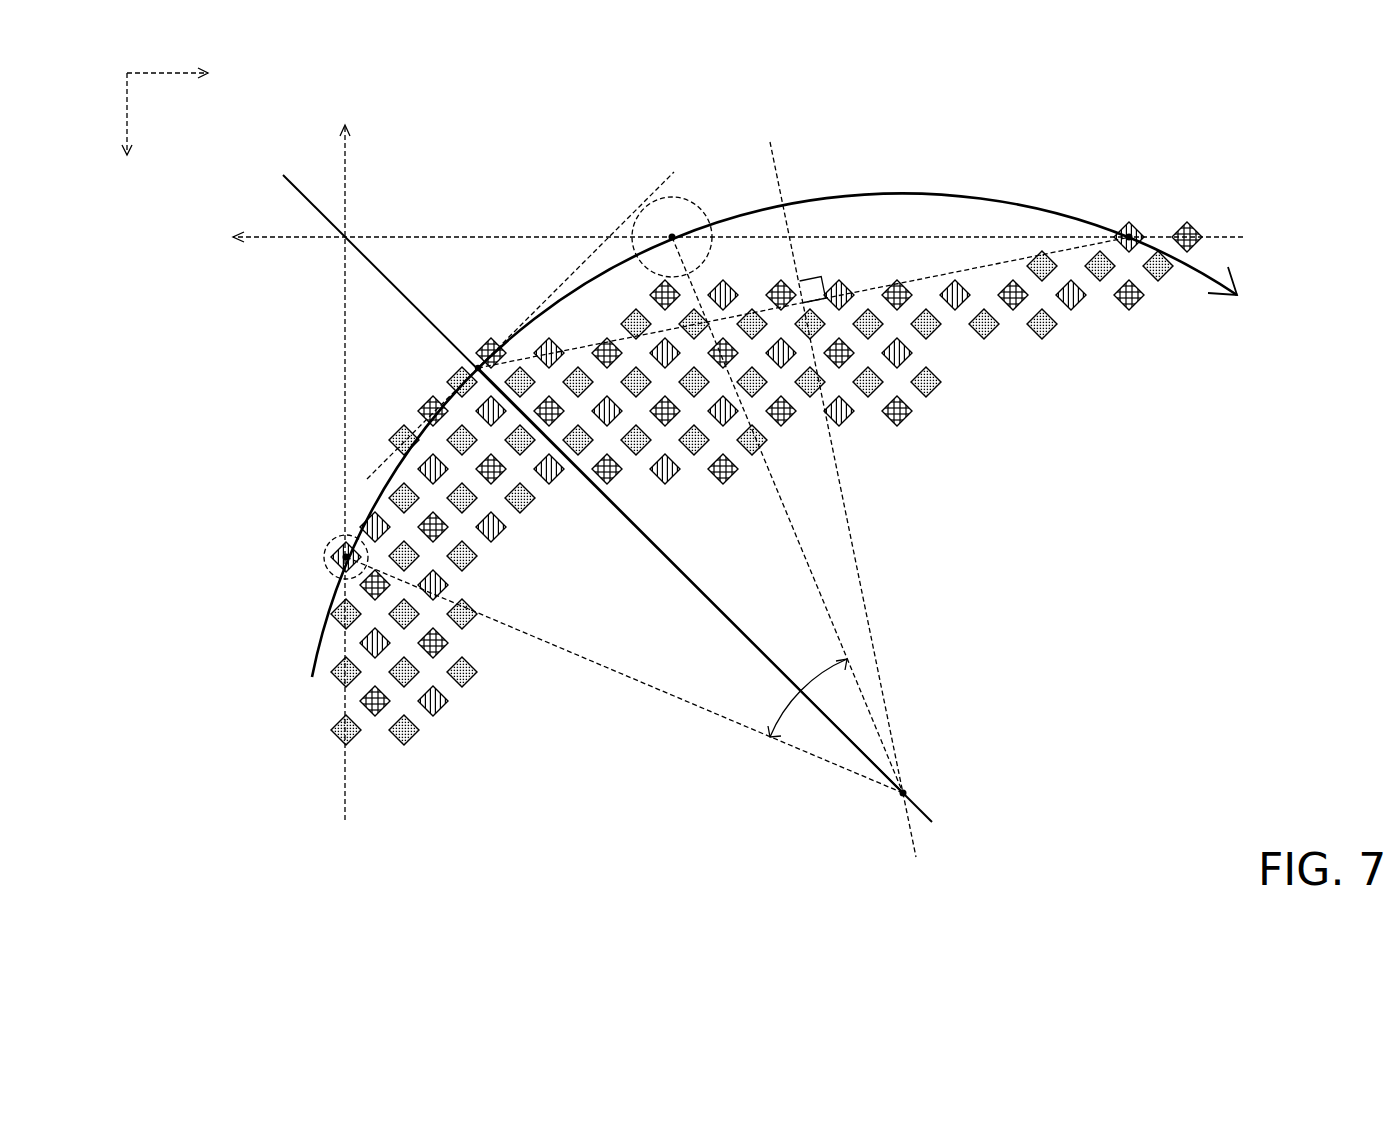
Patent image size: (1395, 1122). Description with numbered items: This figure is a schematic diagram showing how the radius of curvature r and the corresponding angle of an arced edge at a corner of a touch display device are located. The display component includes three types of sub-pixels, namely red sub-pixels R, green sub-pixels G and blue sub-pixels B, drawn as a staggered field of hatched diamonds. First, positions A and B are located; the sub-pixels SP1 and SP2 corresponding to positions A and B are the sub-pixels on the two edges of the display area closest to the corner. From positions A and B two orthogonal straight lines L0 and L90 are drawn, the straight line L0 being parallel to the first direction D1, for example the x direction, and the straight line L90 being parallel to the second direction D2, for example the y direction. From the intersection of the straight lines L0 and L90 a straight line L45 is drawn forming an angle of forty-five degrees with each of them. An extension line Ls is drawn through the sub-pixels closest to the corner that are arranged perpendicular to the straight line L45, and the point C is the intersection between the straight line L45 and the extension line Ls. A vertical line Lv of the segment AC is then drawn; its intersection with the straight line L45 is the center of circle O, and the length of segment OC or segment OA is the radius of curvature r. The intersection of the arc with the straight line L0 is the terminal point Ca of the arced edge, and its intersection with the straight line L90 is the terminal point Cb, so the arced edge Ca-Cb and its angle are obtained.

The first direction D1 is at (200, 75).
The second direction D2 is at (128, 144).
The straight line L0 is at (757, 238).
The straight line L45 is at (596, 483).
The straight line L90 is at (349, 490).
The extension line Ls is at (531, 314).
The vertical line Lv is at (836, 485).
The radius of curvature r is at (690, 580).
The center of circle O is at (916, 792).
The point C is at (478, 364).
The terminal point Ca is at (672, 237).
The terminal point Cb is at (338, 572).
The sub-pixel SP1 is at (1132, 226).
The sub-pixel SP2 is at (336, 561).
The position A is at (1140, 234).
The blue sub-pixel B is at (337, 554).
The red sub-pixel R is at (1013, 303).
The green sub-pixel G is at (1045, 333).